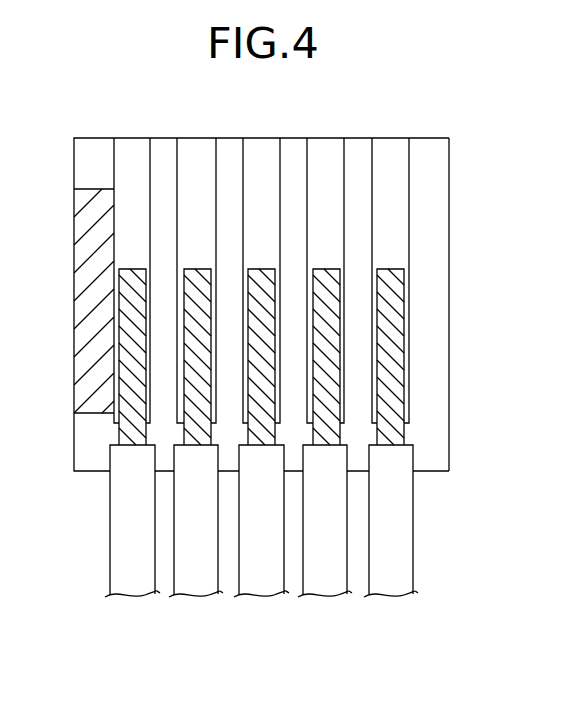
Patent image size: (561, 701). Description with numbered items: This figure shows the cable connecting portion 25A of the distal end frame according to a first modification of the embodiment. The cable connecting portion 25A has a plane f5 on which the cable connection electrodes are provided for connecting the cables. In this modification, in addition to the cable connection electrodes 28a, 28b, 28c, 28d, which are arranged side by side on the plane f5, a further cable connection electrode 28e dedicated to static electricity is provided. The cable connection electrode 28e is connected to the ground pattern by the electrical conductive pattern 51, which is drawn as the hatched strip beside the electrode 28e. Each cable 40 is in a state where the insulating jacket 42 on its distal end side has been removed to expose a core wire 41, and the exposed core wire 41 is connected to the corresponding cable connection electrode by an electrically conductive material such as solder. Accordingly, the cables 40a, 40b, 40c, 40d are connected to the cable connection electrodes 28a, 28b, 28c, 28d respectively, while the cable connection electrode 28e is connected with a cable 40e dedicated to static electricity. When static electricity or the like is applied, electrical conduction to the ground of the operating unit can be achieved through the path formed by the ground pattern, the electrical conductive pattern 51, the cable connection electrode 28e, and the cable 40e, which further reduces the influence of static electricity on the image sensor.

The cable connecting portion 25A is at (422, 303).
The plane f5 is at (422, 222).
The electrical conductive pattern 51 is at (90, 303).
The cable connection electrode 28e is at (83, 267).
The cable connection electrode 28a is at (196, 153).
The cable connection electrode 28b is at (261, 153).
The cable connection electrode 28c is at (325, 153).
The cable connection electrode 28d is at (390, 153).
The core wire 41 is at (132, 433).
The insulating jacket 42 is at (130, 521).
The cable 40 is at (216, 562).
The cable 40e is at (87, 550).
The cable 40a is at (194, 582).
The cable 40b is at (259, 582).
The cable 40c is at (323, 582).
The cable 40d is at (388, 582).